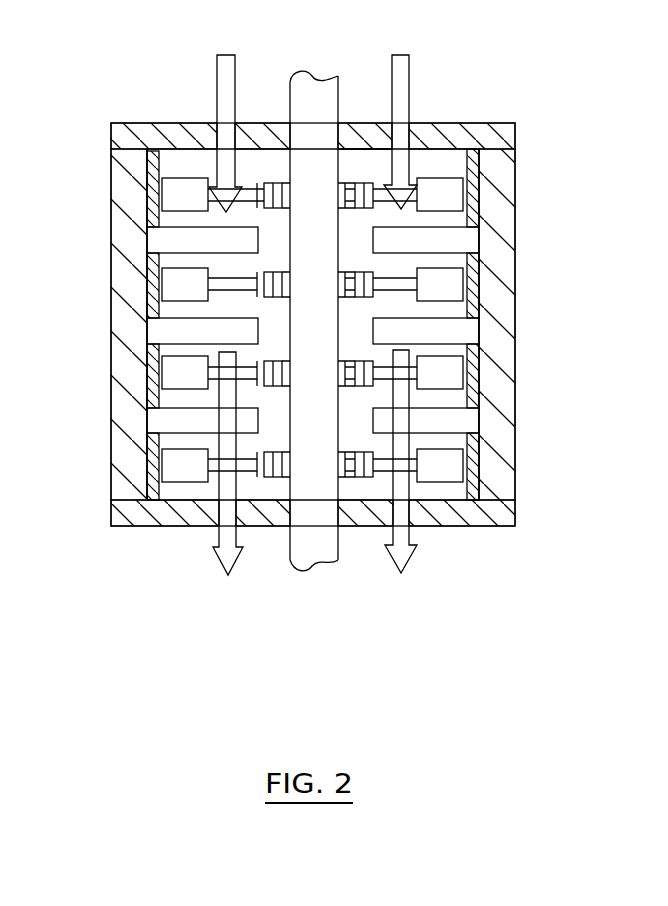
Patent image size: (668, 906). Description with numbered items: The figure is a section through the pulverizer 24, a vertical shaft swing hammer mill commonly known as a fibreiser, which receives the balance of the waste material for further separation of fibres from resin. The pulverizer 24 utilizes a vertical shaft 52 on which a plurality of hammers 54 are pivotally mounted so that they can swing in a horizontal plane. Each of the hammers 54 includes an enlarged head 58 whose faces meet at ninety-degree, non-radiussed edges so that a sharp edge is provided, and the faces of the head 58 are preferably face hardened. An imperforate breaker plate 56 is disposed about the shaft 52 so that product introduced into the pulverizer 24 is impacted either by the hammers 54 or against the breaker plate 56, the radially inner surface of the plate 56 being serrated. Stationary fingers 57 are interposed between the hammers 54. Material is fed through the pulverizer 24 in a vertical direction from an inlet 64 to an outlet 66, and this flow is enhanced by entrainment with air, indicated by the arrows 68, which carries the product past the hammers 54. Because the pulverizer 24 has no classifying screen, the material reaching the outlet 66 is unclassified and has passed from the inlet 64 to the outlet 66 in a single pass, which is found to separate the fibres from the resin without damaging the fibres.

The pulverizer 24 is at (550, 251).
The vertical shaft 52 is at (333, 77).
The hammers 54 is at (413, 152).
The imperforate breaker plate 56 is at (160, 158).
The stationary fingers 57 is at (458, 238).
The enlarged head 58 is at (478, 162).
The inlet 64 is at (202, 135).
The outlet 66 is at (202, 517).
The arrows 68 is at (230, 70).